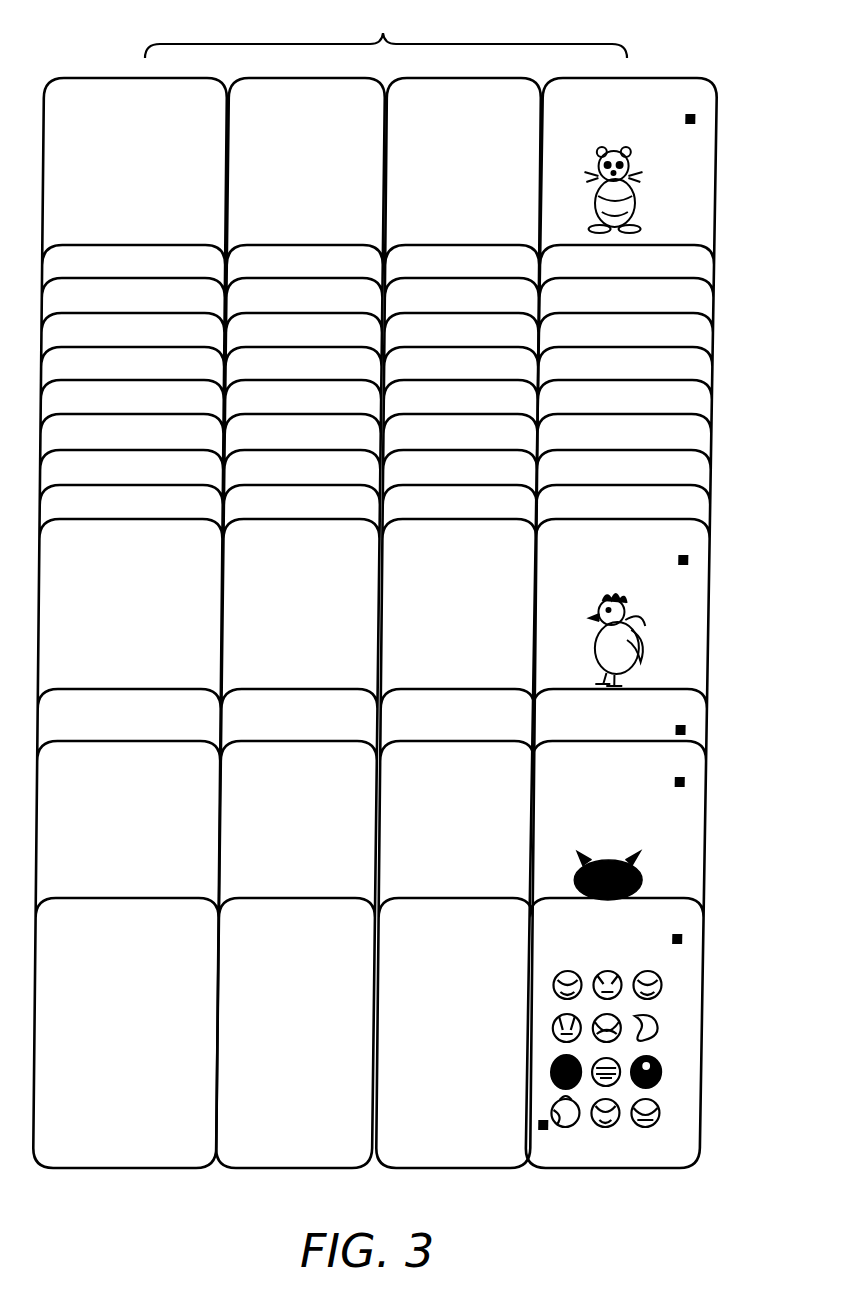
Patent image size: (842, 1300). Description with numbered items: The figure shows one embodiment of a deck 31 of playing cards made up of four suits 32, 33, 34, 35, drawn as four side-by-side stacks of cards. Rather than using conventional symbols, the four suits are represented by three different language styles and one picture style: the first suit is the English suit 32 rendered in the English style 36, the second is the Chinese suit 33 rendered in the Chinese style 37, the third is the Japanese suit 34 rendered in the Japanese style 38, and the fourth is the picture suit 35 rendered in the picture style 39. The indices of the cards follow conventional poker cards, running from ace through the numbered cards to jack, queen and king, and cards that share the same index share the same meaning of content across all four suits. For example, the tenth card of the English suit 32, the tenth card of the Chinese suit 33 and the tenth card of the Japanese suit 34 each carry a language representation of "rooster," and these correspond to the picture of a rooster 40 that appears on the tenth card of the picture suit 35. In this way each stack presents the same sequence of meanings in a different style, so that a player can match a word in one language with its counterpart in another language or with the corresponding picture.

The deck 31 is at (386, 29).
The English suit 32 is at (148, 86).
The Chinese suit 33 is at (307, 72).
The Japanese suit 34 is at (457, 83).
The picture suit 35 is at (645, 83).
The English style 36 is at (98, 150).
The Chinese style 37 is at (317, 163).
The Japanese style 38 is at (413, 153).
The picture style 39 is at (648, 182).
The picture of a rooster 40 is at (648, 618).